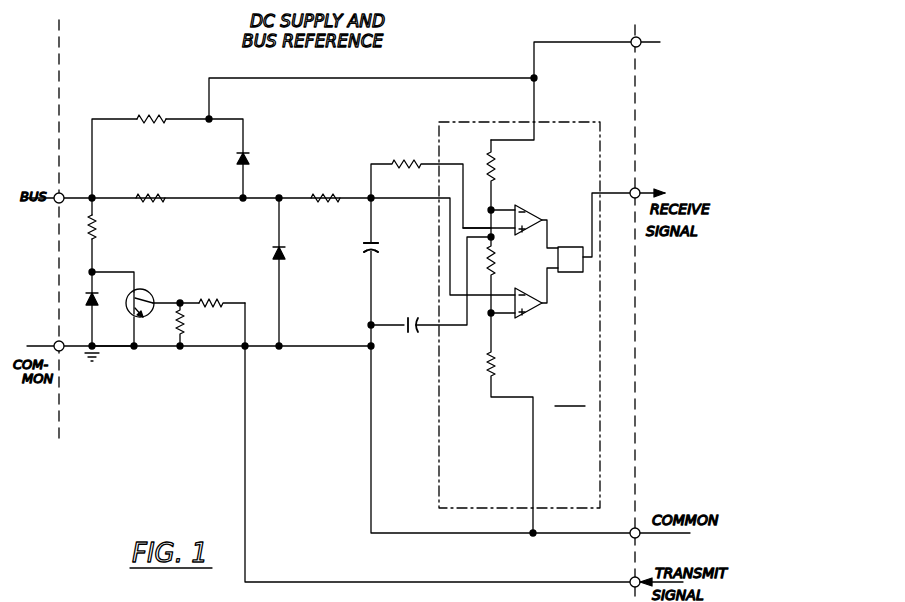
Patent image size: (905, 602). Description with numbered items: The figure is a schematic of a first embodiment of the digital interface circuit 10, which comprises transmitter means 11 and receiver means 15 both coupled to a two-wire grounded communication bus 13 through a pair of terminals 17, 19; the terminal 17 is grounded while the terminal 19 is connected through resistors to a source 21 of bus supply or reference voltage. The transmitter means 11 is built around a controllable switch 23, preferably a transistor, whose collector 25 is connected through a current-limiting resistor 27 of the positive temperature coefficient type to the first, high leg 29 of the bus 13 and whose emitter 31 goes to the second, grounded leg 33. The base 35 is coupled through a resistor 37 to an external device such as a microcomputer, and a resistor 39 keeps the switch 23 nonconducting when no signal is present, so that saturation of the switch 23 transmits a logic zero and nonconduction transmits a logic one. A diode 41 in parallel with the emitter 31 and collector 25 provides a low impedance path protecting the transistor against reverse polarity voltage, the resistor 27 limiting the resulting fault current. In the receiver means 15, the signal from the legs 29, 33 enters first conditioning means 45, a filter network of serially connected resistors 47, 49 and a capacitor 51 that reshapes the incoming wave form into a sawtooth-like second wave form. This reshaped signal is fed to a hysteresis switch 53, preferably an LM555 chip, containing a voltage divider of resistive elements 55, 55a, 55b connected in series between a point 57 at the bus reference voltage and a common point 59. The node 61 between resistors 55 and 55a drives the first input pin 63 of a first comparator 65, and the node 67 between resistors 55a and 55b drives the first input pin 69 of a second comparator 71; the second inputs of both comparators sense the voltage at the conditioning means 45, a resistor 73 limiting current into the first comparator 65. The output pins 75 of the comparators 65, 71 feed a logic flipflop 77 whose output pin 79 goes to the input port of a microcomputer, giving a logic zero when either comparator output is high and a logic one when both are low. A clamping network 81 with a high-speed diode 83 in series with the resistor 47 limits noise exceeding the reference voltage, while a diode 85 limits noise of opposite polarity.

The digital interface circuit 10 is at (220, 438).
The transmitter means 11 is at (162, 264).
The communication bus 13 is at (58, 344).
The receiver means 15 is at (278, 180).
The terminal 17 is at (62, 352).
The terminal 19 is at (59, 194).
The source of bus supply or reference voltage 21 is at (206, 76).
The controllable switch 23 is at (133, 296).
The collector 25 is at (125, 274).
The current-limiting resistor 27 is at (98, 239).
The first high leg 29 is at (92, 198).
The emitter 31 is at (140, 341).
The second grounded leg 33 is at (120, 346).
The base 35 is at (172, 302).
The resistor 37 is at (226, 299).
The resistor 39 is at (185, 332).
The diode 41 is at (95, 304).
The first conditioning means 45 is at (340, 231).
The resistor 47 is at (165, 197).
The resistor 49 is at (335, 192).
The capacitor 51 is at (361, 245).
The hysteresis switch 53 is at (568, 121).
The resistive element 55 is at (490, 157).
The resistive element 55a is at (495, 255).
The resistive element 55b is at (495, 367).
The point 57 is at (533, 78).
The common point 59 is at (533, 536).
The node 61 is at (493, 210).
The first input pin 63 is at (511, 209).
The first comparator 65 is at (538, 213).
The node 67 is at (489, 314).
The first input pin 69 is at (507, 320).
The second comparator 71 is at (542, 308).
The resistor 73 is at (422, 160).
The output pins 75 is at (548, 224).
The logic flipflop 77 is at (583, 268).
The output pin 79 is at (639, 192).
The clamping network 81 is at (281, 135).
The diode 83 is at (236, 157).
The diode 85 is at (284, 262).